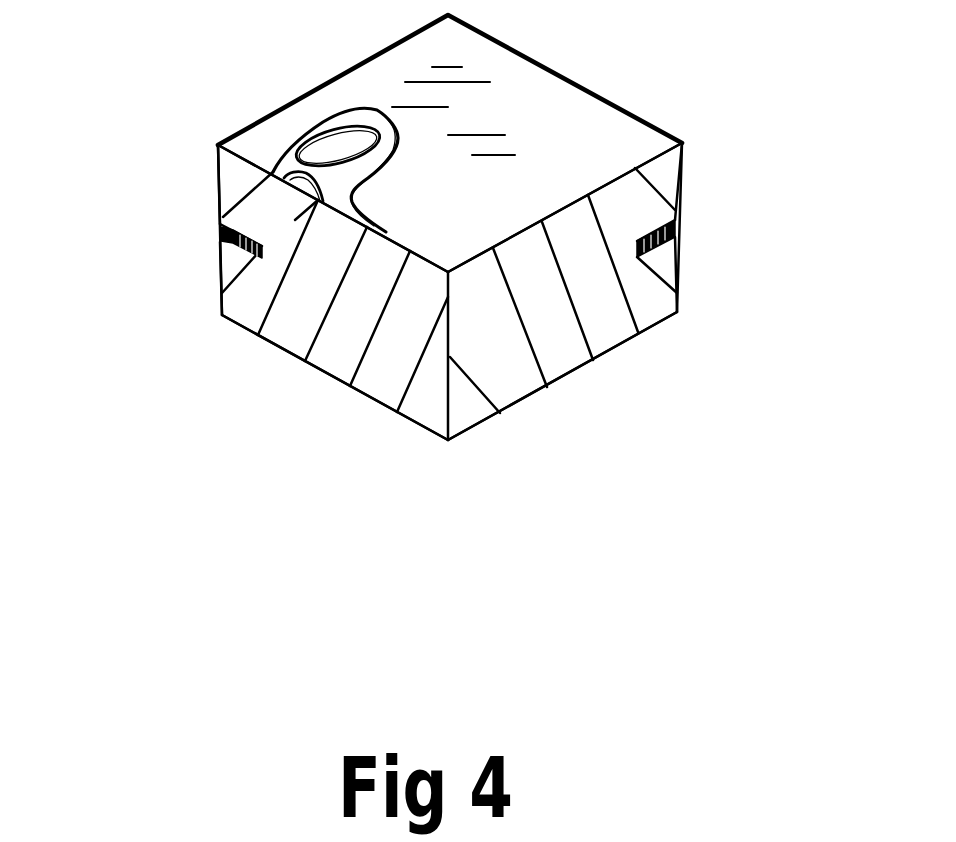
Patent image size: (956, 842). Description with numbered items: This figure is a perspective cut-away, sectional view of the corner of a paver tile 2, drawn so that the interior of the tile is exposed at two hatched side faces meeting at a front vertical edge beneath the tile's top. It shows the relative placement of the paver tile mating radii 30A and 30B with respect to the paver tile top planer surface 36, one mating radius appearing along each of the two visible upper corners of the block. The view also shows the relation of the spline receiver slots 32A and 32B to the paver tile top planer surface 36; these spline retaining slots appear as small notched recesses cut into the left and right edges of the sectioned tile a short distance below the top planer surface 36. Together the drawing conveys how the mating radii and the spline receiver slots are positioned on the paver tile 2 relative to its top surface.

The paver tile 2 is at (463, 75).
The paver tile mating radius 30A is at (243, 234).
The paver tile mating radius 30B is at (642, 270).
The spline receiver slot 32A is at (162, 257).
The spline receiver slot 32B is at (736, 257).
The paver tile top planer surface 36 is at (489, 142).